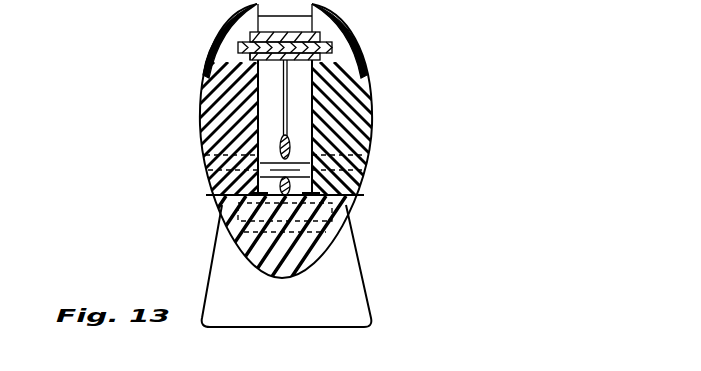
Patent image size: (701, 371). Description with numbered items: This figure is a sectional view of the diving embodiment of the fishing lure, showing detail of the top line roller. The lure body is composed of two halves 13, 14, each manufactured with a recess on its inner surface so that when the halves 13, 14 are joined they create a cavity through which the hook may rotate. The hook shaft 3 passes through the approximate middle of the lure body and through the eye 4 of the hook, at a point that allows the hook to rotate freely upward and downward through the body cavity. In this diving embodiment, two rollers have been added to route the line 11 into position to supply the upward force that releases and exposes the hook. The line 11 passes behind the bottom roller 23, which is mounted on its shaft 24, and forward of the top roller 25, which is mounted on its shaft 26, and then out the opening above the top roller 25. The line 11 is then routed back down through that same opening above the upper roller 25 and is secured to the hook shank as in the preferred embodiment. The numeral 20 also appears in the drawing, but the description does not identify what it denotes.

The hook shaft 3 is at (291, 165).
The eye 4 is at (281, 143).
The line 11 is at (287, 93).
The lure body half 13 is at (368, 123).
The lure body half 14 is at (205, 123).
The stand 20 is at (298, 309).
The bottom roller 23 is at (318, 247).
The shaft 24 is at (358, 199).
The top roller 25 is at (254, 60).
The shaft 26 is at (330, 50).